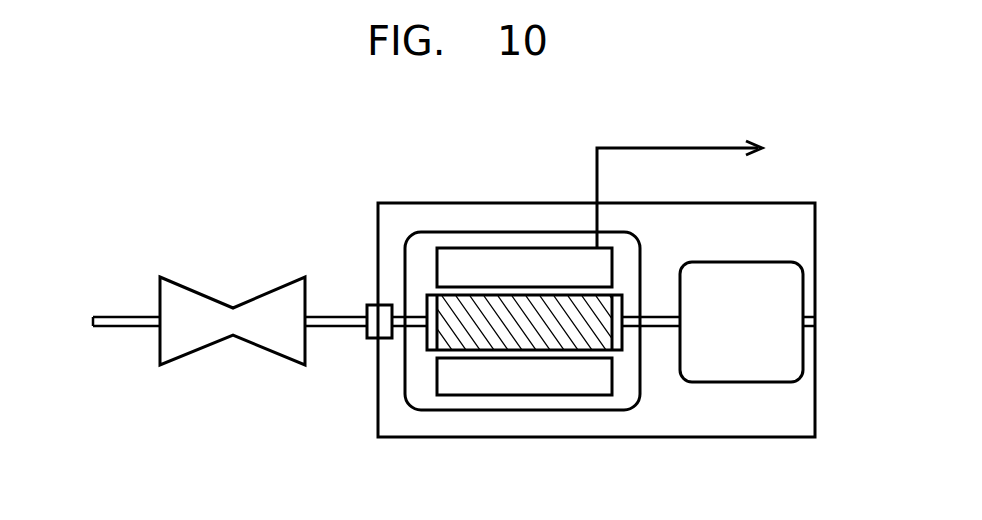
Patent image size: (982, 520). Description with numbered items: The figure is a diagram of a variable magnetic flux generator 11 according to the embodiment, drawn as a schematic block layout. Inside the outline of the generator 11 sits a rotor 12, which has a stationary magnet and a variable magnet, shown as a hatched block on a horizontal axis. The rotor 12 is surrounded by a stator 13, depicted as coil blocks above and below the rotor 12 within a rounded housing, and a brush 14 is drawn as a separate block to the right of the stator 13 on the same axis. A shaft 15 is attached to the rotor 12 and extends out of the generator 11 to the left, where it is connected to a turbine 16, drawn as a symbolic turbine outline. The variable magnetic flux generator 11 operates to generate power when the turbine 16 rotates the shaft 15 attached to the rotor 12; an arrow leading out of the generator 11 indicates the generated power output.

The variable magnetic flux generator 11 is at (425, 203).
The rotor 12 is at (538, 338).
The stator 13 is at (492, 383).
The brush 14 is at (732, 368).
The shaft 15 is at (343, 330).
The turbine 16 is at (277, 287).